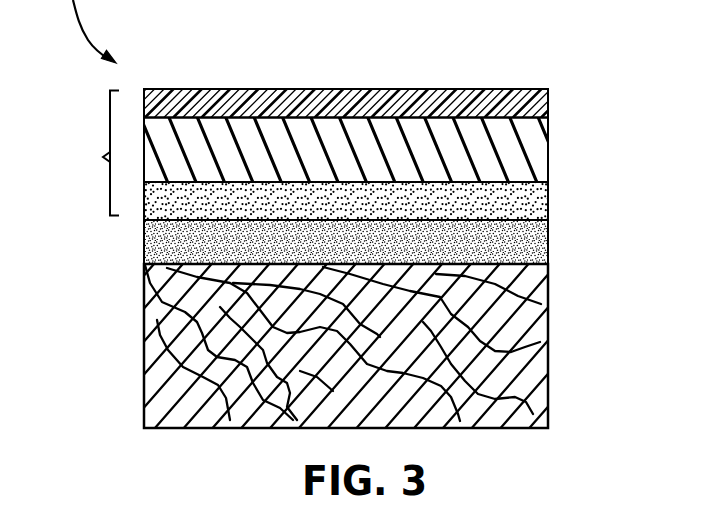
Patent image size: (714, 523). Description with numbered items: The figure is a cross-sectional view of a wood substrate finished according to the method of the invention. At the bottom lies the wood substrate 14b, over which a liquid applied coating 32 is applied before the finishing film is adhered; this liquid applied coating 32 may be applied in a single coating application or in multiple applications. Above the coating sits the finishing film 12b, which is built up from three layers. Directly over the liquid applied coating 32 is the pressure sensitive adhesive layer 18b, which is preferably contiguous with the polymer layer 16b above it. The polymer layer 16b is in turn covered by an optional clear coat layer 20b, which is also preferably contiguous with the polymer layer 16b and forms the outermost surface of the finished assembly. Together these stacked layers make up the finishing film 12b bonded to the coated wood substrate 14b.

The finishing film 12b is at (86, 153).
The wood substrate 14b is at (548, 347).
The polymer layer 16b is at (548, 153).
The pressure sensitive adhesive layer 18b is at (548, 203).
The clear coat layer 20b is at (548, 103).
The liquid applied coating 32 is at (548, 247).